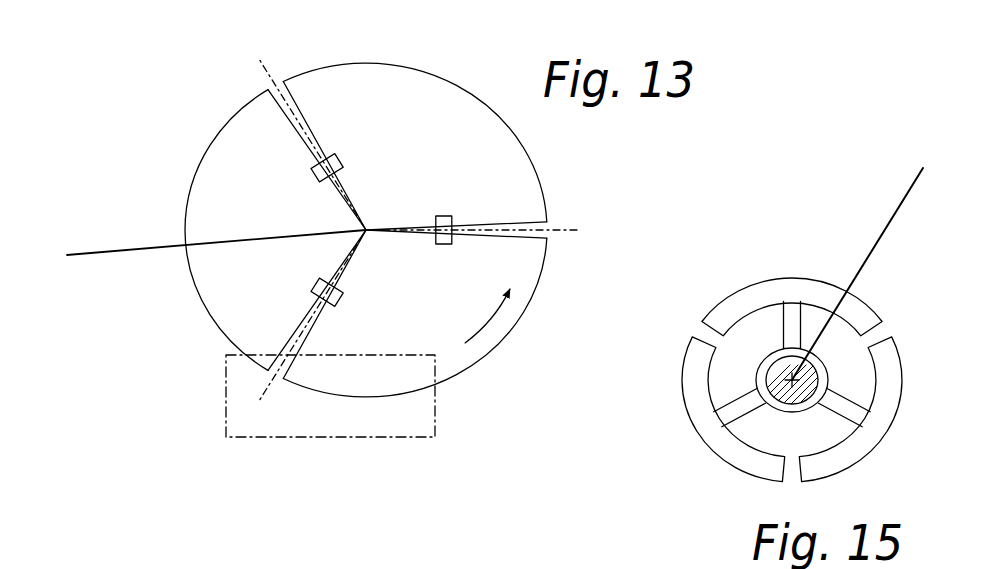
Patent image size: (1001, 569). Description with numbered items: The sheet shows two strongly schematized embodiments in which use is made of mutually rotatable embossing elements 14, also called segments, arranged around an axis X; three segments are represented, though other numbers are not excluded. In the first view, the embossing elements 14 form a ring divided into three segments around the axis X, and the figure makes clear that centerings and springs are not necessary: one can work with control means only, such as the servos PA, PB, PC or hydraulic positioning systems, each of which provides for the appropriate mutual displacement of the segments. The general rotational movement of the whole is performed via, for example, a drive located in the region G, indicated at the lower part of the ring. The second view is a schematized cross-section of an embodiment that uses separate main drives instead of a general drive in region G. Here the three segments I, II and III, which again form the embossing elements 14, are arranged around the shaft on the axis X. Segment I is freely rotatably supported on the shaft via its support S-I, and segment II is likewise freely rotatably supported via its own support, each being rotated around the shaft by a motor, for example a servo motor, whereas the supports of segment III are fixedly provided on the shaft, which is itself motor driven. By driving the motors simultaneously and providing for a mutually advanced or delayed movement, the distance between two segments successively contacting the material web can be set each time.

In FIG. 13, the embossing elements 14 is at (214, 139).
In FIG. 15, the embossing elements 14 is at (783, 276).
In FIG. 13, the servo PA is at (343, 295).
In FIG. 13, the servo PB is at (440, 216).
In FIG. 13, the servo PC is at (340, 160).
In FIG. 13, the drive region G is at (250, 437).
In FIG. 13, the axis X is at (195, 244).
In FIG. 15, the axis X is at (861, 262).
In FIG. 15, the segment I is at (790, 294).
In FIG. 15, the segment II is at (708, 426).
In FIG. 15, the segment III is at (877, 426).
In FIG. 15, the support S-I is at (777, 401).